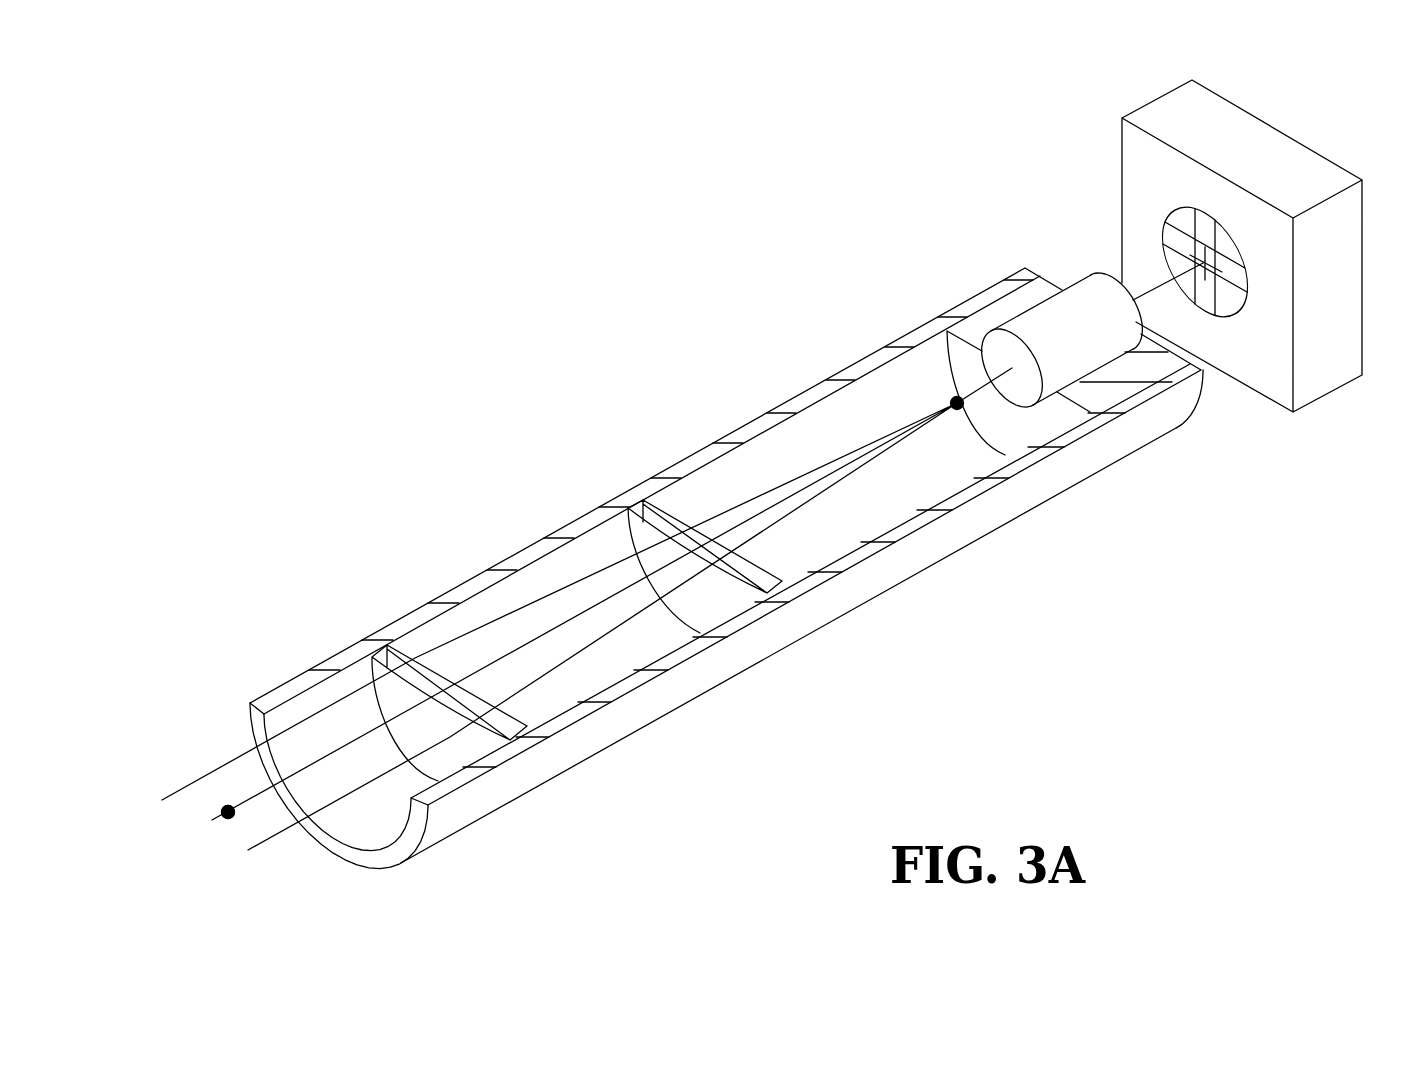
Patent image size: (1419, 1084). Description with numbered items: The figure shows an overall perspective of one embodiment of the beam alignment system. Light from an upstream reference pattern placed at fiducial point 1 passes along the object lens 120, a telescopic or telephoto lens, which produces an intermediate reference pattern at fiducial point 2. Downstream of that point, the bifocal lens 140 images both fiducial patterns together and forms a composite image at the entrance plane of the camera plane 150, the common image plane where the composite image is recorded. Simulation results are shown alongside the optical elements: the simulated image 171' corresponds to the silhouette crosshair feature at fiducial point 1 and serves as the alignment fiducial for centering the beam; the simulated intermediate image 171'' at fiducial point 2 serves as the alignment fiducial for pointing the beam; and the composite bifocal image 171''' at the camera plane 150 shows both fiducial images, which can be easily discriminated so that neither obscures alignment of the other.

The fiducial point # 1 is at (227, 819).
The fiducial point # 2 is at (950, 403).
The object lens 120 is at (654, 462).
The bifocal lens 140 is at (1032, 333).
The camera plane 150 is at (1137, 150).
The upstream reference pattern image 171' is at (439, 860).
The intermediate reference pattern image 171'' is at (1038, 491).
The composite bifocal image 171''' is at (1254, 375).